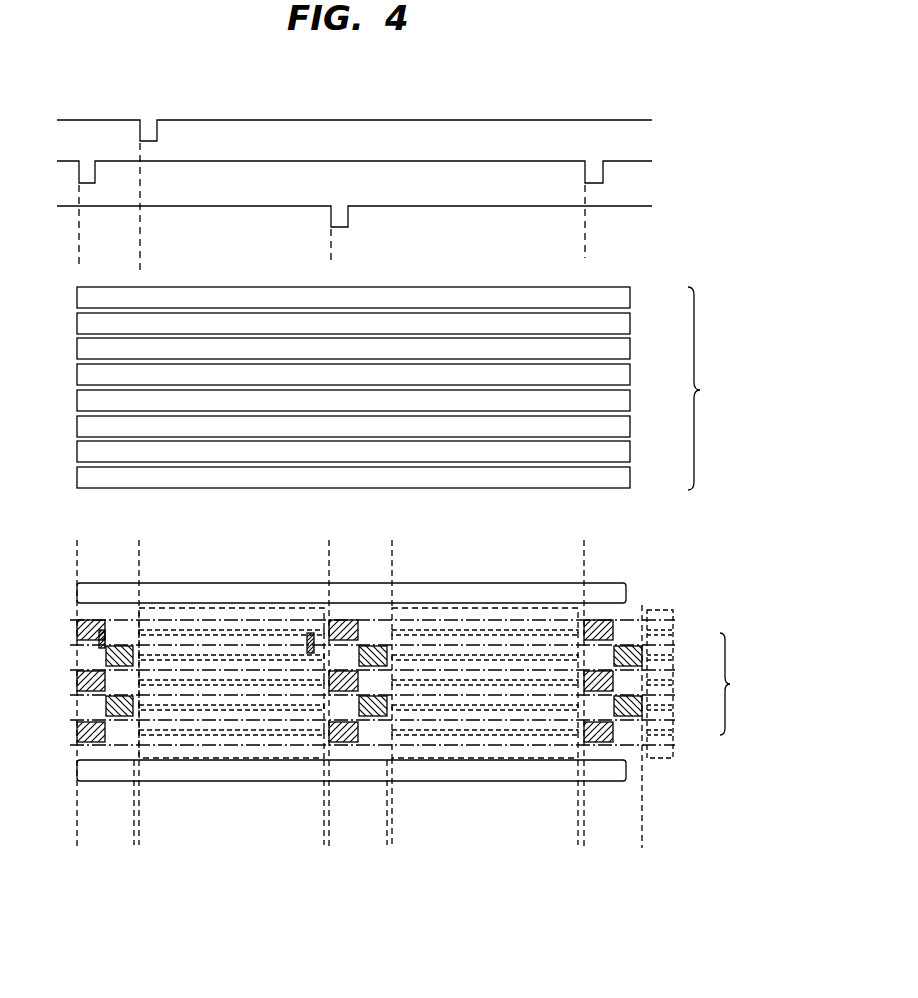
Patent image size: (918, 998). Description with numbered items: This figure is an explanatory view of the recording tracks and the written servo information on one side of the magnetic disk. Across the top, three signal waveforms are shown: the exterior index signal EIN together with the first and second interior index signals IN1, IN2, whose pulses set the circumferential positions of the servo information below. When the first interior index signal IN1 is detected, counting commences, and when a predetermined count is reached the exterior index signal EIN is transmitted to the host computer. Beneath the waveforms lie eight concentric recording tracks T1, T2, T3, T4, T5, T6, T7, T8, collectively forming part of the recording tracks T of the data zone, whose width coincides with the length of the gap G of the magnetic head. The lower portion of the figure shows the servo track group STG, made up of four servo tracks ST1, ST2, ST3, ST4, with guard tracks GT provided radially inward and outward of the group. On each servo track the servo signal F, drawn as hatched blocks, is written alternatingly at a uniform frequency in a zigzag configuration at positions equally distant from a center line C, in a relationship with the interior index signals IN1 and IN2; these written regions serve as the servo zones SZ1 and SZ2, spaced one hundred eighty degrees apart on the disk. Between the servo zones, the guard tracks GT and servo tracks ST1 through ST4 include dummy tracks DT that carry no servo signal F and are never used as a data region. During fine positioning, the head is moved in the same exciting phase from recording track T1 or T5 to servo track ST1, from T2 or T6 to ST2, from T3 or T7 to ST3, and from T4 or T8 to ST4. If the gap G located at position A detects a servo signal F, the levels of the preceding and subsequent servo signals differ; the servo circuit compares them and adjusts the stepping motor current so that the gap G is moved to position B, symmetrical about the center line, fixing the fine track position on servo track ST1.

The exterior index signal EIN is at (372, 196).
The first interior index signal IN1 is at (372, 214).
The second interior index signal IN2 is at (372, 234).
The recording track T1 is at (630, 300).
The recording track T2 is at (630, 326).
The recording track T3 is at (630, 351).
The recording track T4 is at (630, 377).
The recording track T5 is at (630, 403).
The recording track T6 is at (630, 429).
The recording track T7 is at (630, 454).
The recording track T8 is at (630, 480).
The recording tracks T is at (466, 590).
The servo signal F is at (94, 619).
The position A is at (117, 611).
The position B is at (313, 619).
The gap of the magnetic head G is at (99, 648).
The center line C is at (505, 669).
The guard track GT is at (662, 609).
The servo track ST1 is at (394, 641).
The servo track ST2 is at (394, 676).
The servo track ST3 is at (394, 703).
The servo track ST4 is at (394, 730).
The servo track group STG is at (744, 684).
The servo zone SZ1 is at (134, 813).
The servo zone SZ2 is at (387, 813).
The dummy track DT is at (324, 813).